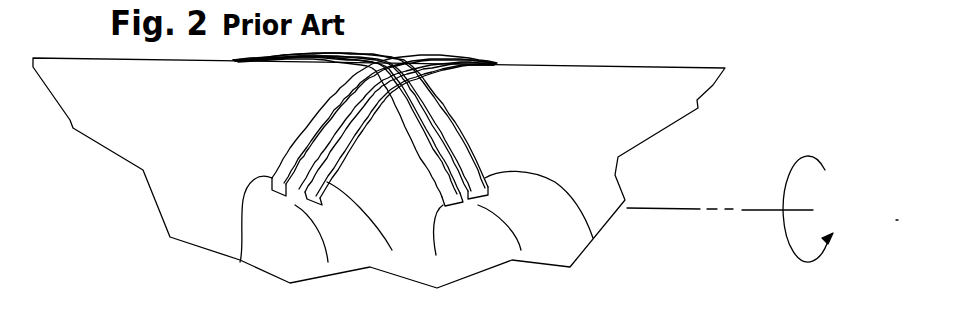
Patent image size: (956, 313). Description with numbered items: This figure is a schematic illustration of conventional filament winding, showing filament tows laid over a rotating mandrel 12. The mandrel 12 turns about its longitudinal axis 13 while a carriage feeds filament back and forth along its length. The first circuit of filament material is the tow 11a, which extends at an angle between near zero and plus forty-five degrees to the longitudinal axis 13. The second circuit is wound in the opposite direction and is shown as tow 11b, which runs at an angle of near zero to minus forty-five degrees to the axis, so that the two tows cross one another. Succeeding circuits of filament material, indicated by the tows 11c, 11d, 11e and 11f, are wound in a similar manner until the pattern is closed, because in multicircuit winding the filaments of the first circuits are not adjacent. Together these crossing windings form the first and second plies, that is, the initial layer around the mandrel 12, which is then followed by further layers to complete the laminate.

The mandrel 12 is at (557, 82).
The longitudinal axis 13 is at (700, 208).
The tow 11a is at (436, 255).
The tow 11b is at (392, 250).
The tow 11c is at (521, 250).
The tow 11d is at (328, 262).
The tow 11e is at (593, 238).
The tow 11f is at (240, 262).